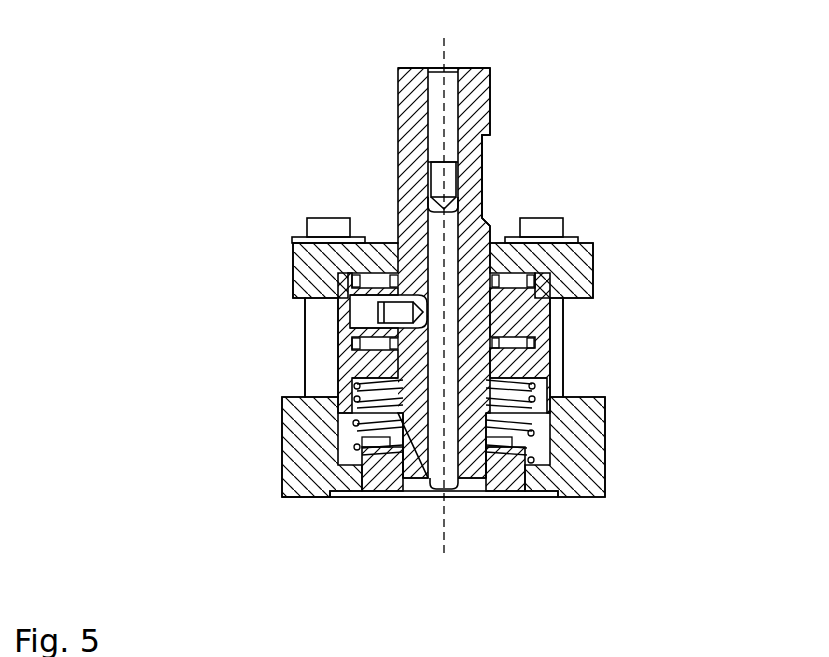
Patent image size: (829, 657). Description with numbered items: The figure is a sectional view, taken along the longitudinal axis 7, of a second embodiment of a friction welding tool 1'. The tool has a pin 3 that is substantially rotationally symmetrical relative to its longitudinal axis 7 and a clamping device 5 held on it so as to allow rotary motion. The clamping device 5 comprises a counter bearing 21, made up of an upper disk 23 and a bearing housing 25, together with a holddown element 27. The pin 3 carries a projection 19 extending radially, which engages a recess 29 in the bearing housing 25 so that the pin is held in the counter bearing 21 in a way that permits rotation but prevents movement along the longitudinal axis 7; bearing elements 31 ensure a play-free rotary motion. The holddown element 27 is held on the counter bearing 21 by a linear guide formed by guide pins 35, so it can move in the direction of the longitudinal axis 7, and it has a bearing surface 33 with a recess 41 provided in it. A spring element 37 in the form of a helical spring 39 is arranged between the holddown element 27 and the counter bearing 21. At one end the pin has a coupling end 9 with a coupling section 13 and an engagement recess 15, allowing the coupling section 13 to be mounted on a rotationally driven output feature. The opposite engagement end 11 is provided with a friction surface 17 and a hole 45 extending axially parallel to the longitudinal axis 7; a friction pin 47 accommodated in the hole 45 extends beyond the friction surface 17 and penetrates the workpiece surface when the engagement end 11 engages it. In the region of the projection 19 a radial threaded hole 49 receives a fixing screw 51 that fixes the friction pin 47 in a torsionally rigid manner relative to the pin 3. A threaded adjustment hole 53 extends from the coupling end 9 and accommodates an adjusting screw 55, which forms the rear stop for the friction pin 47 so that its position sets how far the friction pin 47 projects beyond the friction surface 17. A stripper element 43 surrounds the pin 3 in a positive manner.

The friction welding tool 1' is at (333, 275).
The pin 3 is at (410, 123).
The clamping device 5 is at (607, 378).
The longitudinal axis 7 is at (441, 50).
The coupling end 9 is at (472, 75).
The engagement end 11 is at (450, 428).
The coupling section 13 is at (410, 95).
The engagement recess 15 is at (482, 182).
The friction surface 17 is at (467, 478).
The projection 19 is at (513, 313).
The counter bearing 21 is at (263, 292).
The upper disk 23 is at (305, 250).
The bearing housing 25 is at (337, 292).
The holddown element 27 is at (305, 478).
The recess 29 is at (370, 345).
The bearing elements 31 is at (520, 282).
The bearing surface 33 is at (313, 497).
The guide pins 35 is at (317, 333).
The spring element 37 is at (353, 422).
The helical spring 39 is at (353, 422).
The recess 41 is at (358, 491).
The stripper element 43 is at (503, 458).
The hole 45 is at (427, 440).
The friction pin 47 is at (472, 438).
The threaded hole 49 is at (368, 312).
The fixing screw 51 is at (398, 305).
The threaded adjustment hole 53 is at (450, 105).
The adjusting screw 55 is at (452, 177).